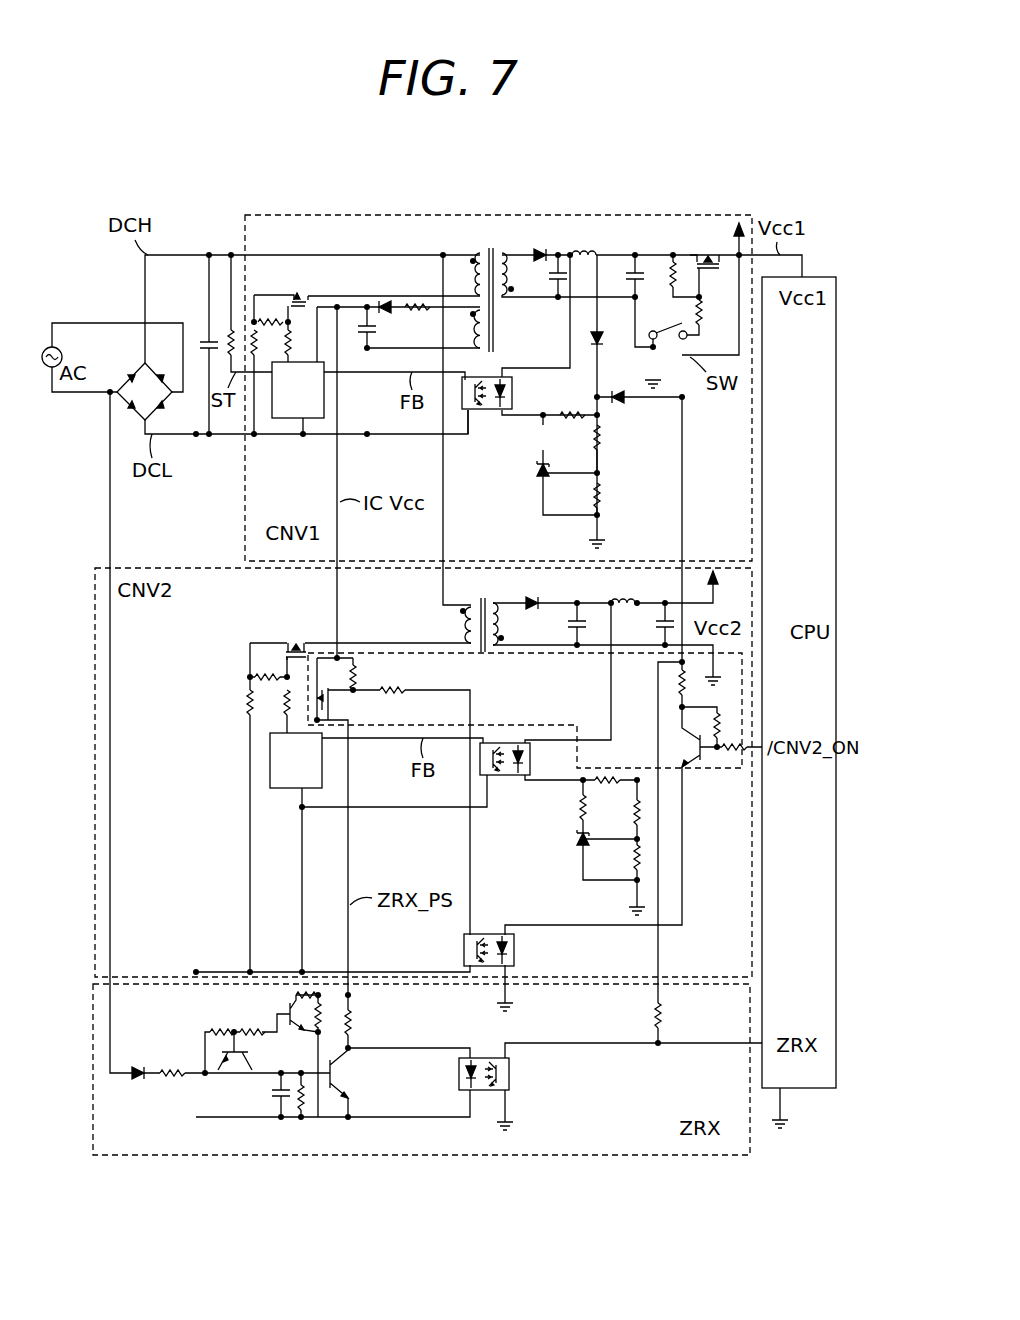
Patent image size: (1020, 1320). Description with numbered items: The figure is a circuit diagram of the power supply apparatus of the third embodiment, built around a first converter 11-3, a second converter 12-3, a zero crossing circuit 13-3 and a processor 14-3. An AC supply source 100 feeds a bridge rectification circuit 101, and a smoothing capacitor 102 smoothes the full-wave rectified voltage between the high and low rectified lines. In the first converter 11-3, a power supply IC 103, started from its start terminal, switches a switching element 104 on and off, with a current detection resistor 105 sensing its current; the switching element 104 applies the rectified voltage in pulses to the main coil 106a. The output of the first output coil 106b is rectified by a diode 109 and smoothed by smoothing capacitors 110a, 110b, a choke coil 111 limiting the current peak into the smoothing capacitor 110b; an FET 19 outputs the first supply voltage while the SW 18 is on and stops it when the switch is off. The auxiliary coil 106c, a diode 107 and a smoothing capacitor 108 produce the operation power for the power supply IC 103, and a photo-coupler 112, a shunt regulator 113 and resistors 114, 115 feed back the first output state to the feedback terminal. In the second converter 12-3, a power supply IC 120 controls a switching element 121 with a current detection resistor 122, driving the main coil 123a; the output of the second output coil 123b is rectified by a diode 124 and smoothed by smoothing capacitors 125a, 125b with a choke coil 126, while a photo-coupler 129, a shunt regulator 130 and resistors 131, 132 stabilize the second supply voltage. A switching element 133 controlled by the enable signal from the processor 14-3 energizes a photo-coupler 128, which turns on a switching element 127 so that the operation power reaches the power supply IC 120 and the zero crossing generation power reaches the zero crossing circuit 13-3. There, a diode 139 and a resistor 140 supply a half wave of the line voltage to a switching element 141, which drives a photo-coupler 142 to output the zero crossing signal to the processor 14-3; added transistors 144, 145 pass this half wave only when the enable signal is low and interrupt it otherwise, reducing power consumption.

The AC supply source 100 is at (62, 353).
The bridge rectification circuit 101 is at (140, 372).
The smoothing capacitor 102 is at (200, 342).
The power supply IC 103 is at (287, 418).
The switching element 104 is at (296, 296).
The current detection resistor 105 is at (250, 335).
The switching transformer main coil 106a is at (473, 280).
The Vcc1 output coil 106b is at (510, 285).
The auxiliary coil 106c is at (472, 330).
The diode 107 is at (365, 325).
The smoothing capacitor 108 is at (337, 305).
The diode 109 is at (537, 252).
The smoothing capacitor 110a is at (556, 272).
The smoothing capacitor 110b is at (632, 275).
The choke coil 111 is at (585, 249).
The SW 18 is at (662, 326).
The FET 19 is at (708, 258).
The CPU 14-3 is at (820, 277).
The first converter 11-3 is at (245, 215).
The second converter 12-3 is at (95, 568).
The zero crossing circuit 13-3 is at (120, 1155).
The photo-coupler 112 is at (490, 412).
The shunt regulator 113 is at (537, 472).
The resistor 114 is at (605, 432).
The resistor 115 is at (605, 480).
The power supply IC 120 is at (278, 788).
The switching element 121 is at (292, 645).
The current detection resistor 122 is at (248, 705).
The switching transformer main coil 123a is at (463, 628).
The Vcc2 output coil 123b is at (495, 612).
The diode 124 is at (532, 598).
The smoothing capacitor 125a is at (577, 610).
The smoothing capacitor 125b is at (665, 615).
The choke coil 126 is at (620, 598).
The switching element 127 is at (330, 695).
The photo-coupler 128 is at (462, 950).
The photo-coupler 129 is at (500, 743).
The shunt regulator 130 is at (578, 845).
The resistor 131 is at (645, 815).
The resistor 132 is at (645, 858).
The switching element 133 is at (705, 762).
The diode 139 is at (140, 1082).
The resistor 140 is at (172, 1085).
The switching element 141 is at (348, 1080).
The photo-coupler 142 is at (512, 1073).
The transistor 144 is at (235, 1068).
The transistor 145 is at (282, 1022).